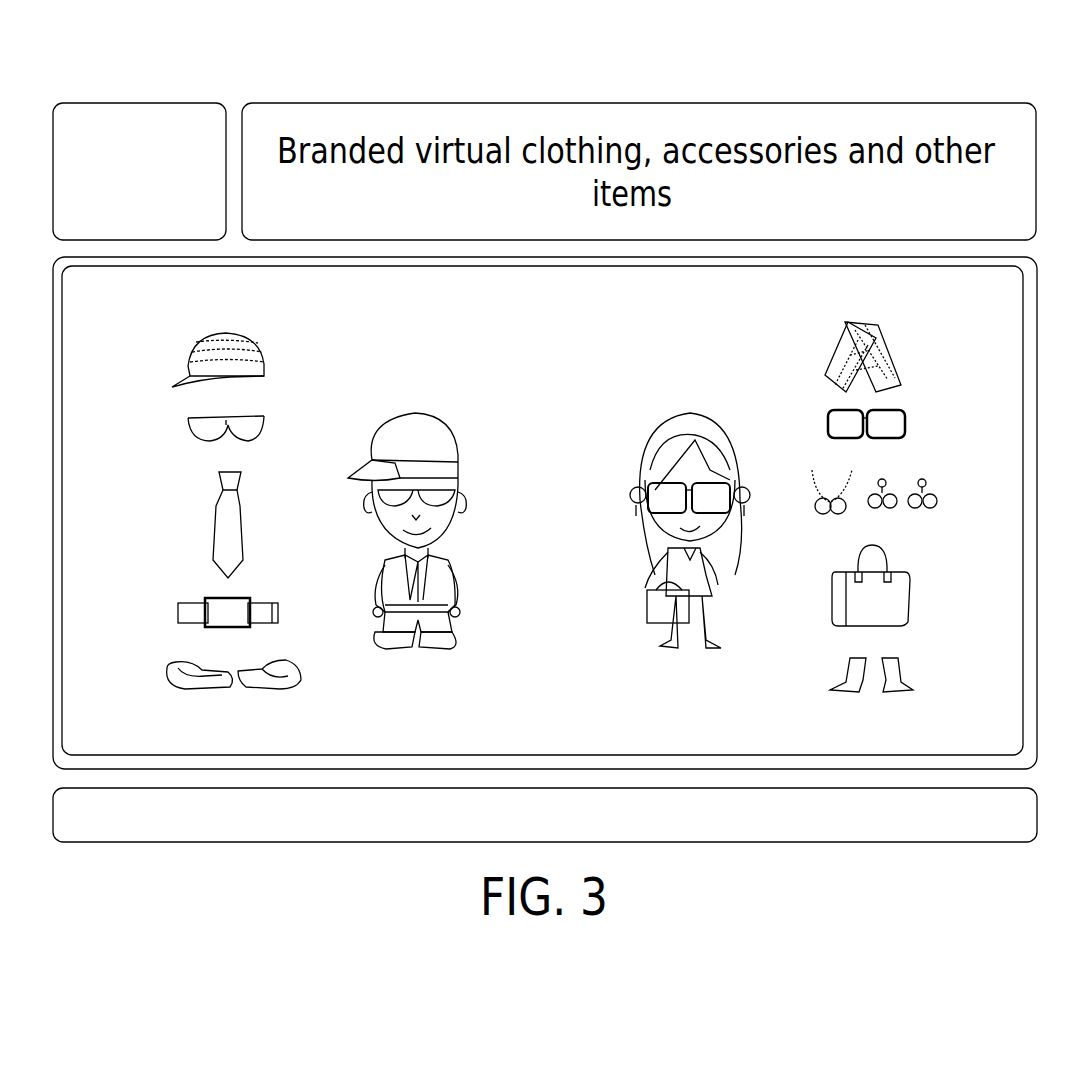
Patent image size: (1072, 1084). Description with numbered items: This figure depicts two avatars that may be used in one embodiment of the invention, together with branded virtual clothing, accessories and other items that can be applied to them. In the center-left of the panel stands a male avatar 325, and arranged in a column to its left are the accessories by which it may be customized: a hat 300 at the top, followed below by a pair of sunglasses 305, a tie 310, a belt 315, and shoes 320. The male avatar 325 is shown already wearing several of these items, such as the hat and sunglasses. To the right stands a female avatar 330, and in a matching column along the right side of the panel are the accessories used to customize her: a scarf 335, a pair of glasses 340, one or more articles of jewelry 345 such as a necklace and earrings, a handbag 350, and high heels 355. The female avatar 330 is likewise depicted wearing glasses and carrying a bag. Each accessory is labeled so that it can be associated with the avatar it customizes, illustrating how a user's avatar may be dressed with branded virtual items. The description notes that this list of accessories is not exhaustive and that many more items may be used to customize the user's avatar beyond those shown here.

The hat 300 is at (190, 354).
The pair of sunglasses 305 is at (190, 425).
The tie 310 is at (212, 518).
The belt 315 is at (178, 622).
The shoes 320 is at (200, 697).
The male avatar 325 is at (404, 400).
The female avatar 330 is at (677, 395).
The scarf 335 is at (890, 343).
The pair of glasses 340 is at (905, 425).
The articles of jewelry 345 is at (917, 471).
The handbag 350 is at (896, 566).
The high heels 355 is at (868, 695).